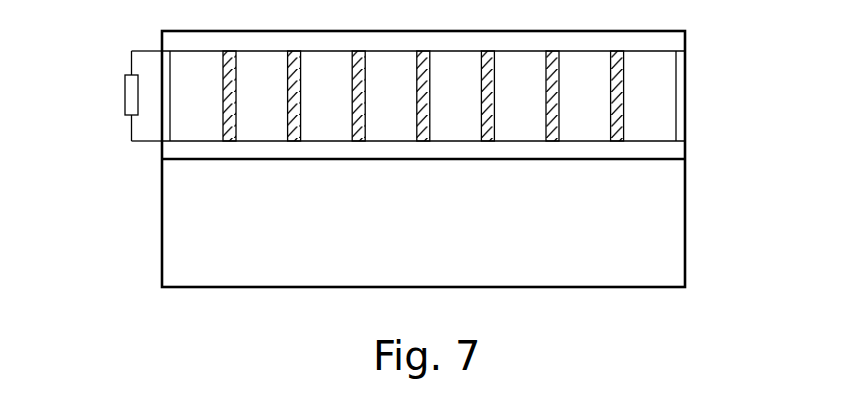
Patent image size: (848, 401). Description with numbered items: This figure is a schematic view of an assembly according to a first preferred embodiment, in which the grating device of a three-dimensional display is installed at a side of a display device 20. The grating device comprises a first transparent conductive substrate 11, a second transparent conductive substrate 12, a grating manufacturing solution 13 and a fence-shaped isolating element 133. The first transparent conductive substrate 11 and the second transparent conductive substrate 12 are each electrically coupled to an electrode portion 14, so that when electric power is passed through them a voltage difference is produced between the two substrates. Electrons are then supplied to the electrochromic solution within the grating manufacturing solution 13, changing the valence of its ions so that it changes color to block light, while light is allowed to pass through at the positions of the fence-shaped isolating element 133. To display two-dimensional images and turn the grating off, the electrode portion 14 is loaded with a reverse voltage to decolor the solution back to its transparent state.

The first transparent conductive substrate 11 is at (667, 41).
The second transparent conductive substrate 12 is at (667, 150).
The grating manufacturing solution 13 is at (667, 112).
The fence-shaped isolating element 133 is at (612, 85).
The electrode portion 14 is at (126, 93).
The display device 20 is at (667, 233).